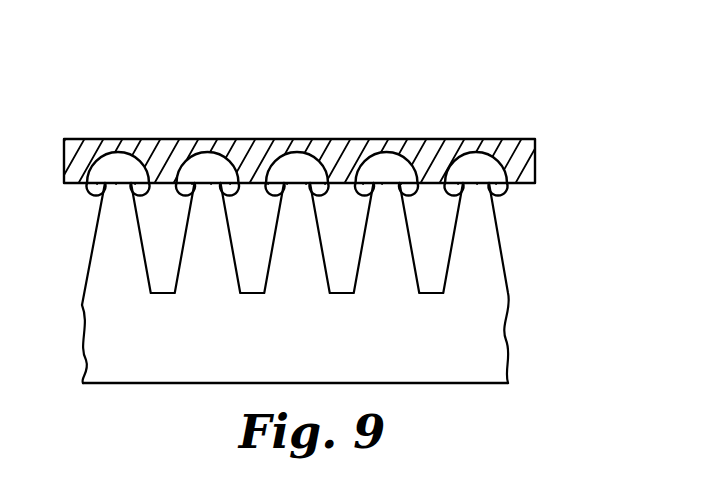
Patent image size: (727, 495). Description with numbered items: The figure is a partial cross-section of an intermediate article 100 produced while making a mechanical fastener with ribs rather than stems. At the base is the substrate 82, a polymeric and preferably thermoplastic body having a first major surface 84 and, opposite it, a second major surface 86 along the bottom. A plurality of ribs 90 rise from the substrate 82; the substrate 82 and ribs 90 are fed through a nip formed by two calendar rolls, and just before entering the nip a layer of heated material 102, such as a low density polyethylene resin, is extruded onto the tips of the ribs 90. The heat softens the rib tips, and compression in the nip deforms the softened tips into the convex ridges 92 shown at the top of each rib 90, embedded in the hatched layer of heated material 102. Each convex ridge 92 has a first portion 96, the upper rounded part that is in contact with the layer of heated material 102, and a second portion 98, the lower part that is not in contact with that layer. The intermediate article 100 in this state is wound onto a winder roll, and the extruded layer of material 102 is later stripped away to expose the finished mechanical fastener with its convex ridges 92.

The intermediate article 100 is at (494, 64).
The layer of heated material 102 is at (190, 147).
The first portion 96 is at (498, 142).
The convex ridges 92 is at (307, 155).
The second portion 98 is at (500, 190).
The substrate 82 is at (497, 337).
The ribs 90 is at (98, 262).
The second major surface 86 is at (482, 385).
The first major surface 84 is at (428, 277).